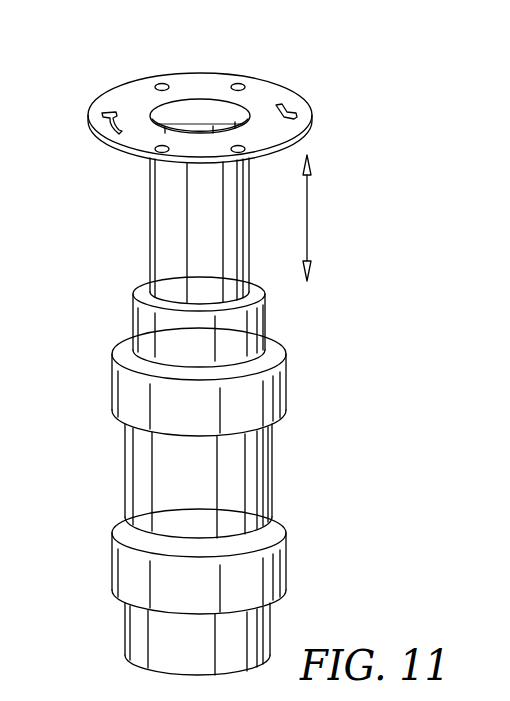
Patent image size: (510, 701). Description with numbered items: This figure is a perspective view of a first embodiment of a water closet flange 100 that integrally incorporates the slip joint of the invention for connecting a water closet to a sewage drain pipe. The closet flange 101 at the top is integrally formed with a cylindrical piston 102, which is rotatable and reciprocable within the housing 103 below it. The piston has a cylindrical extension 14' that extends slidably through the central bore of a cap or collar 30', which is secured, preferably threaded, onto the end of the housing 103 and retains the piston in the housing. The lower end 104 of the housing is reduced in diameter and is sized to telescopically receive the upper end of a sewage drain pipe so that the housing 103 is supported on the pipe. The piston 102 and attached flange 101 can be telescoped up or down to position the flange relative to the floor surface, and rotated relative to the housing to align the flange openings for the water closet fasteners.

The water closet flange 100 is at (249, 342).
The closet flange 101 is at (255, 95).
The cylindrical piston 102 is at (166, 250).
The cylindrical extension 14' is at (186, 163).
The cap or collar 30' is at (252, 356).
The housing 103 is at (268, 462).
The lower end of the housing 104 is at (142, 629).